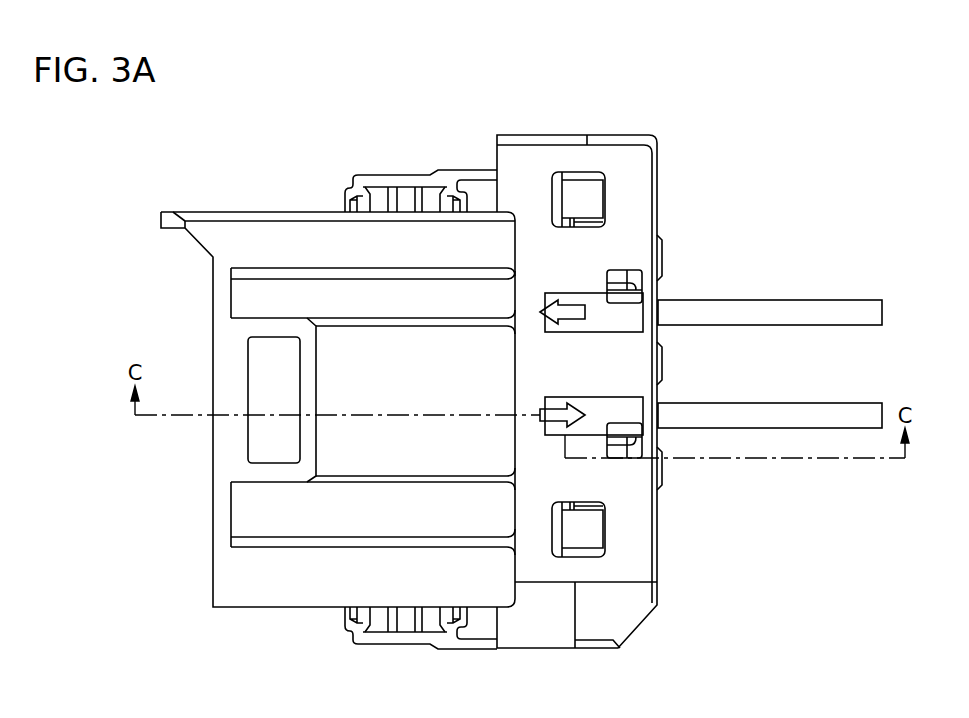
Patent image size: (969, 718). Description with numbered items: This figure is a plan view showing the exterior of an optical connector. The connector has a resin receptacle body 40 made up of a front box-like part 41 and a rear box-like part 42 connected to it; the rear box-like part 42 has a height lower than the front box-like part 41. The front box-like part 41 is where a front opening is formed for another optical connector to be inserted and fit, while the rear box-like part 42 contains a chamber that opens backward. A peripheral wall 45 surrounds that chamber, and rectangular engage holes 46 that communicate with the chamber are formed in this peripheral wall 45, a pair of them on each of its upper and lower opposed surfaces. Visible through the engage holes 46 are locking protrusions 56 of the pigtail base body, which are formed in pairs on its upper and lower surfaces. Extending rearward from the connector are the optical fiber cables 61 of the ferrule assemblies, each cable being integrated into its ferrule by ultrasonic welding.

The receptacle body 40 is at (247, 211).
The front box-like part 41 is at (275, 607).
The rear box-like part 42 is at (657, 565).
The peripheral wall 45 is at (635, 168).
The engage holes 46 is at (553, 200).
The locking protrusions 56 is at (591, 192).
The optical fiber cable 61 is at (838, 300).